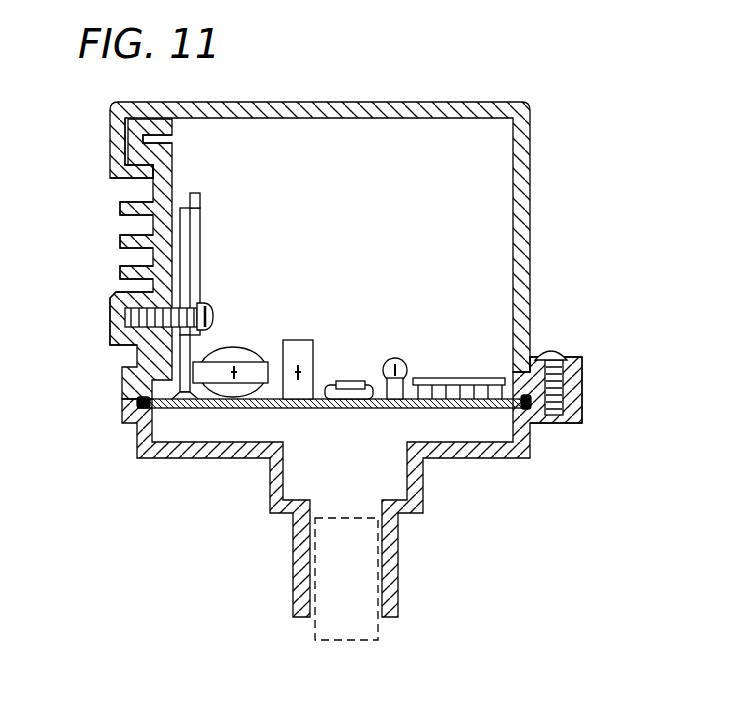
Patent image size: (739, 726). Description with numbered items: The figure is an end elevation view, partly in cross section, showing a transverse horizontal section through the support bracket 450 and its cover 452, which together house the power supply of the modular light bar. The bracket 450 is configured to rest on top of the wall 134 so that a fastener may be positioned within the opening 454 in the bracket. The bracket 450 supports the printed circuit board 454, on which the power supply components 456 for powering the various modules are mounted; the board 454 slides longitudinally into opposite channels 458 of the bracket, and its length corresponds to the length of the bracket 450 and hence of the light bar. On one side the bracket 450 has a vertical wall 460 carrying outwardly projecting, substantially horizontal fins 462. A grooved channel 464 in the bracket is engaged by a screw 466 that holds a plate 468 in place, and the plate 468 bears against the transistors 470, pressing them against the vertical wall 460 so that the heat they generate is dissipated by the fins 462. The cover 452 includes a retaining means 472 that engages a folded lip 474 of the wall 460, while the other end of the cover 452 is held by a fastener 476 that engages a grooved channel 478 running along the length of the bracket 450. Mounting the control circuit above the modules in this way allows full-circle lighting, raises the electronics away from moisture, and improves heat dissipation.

The wall 134 is at (378, 632).
The support bracket 450 is at (490, 499).
The cover 452 is at (447, 101).
The printed circuit board 454 is at (347, 503).
The power supply components 456 is at (336, 329).
The channels 458 is at (122, 397).
The wall 460 is at (173, 165).
The fins 462 is at (120, 209).
The grooved channel 464 is at (133, 350).
The screw 466 is at (204, 303).
The plate 468 is at (196, 247).
The transistors 470 is at (190, 194).
The retaining means 472 is at (110, 132).
The folded lip 474 is at (147, 138).
The fastener 476 is at (550, 352).
The grooved channel 478 is at (582, 387).